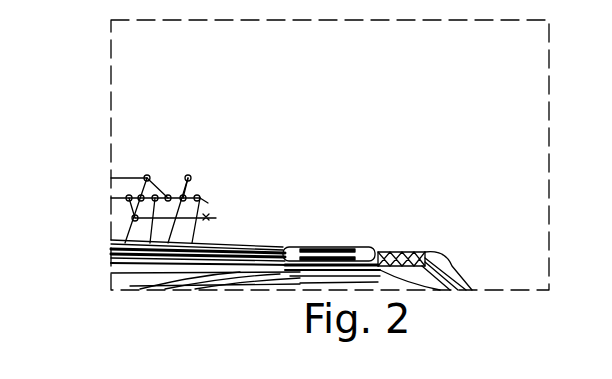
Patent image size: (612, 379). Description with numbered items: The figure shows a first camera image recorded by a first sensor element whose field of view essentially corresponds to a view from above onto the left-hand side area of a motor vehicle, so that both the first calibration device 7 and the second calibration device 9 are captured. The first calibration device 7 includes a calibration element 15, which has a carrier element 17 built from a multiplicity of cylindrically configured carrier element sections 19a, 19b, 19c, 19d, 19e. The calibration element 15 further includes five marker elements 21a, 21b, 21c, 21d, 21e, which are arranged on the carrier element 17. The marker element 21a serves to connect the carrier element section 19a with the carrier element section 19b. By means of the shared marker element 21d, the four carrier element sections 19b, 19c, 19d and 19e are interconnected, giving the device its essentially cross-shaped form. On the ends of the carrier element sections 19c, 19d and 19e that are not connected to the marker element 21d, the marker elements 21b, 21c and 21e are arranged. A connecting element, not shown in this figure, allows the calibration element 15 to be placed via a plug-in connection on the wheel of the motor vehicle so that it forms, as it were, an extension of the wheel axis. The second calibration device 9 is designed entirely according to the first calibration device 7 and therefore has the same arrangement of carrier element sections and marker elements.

The second calibration device 9 is at (96, 100).
The first calibration device 7 is at (162, 95).
The calibration element 15 is at (203, 95).
The carrier element 17 is at (228, 108).
The carrier element section 19a is at (111, 258).
The carrier element section 19b is at (207, 204).
The carrier element section 19c is at (200, 196).
The carrier element section 19d is at (188, 178).
The carrier element section 19e is at (129, 200).
The marker element 21a is at (210, 220).
The marker element 21b is at (203, 194).
The marker element 21c is at (197, 196).
The marker element 21d is at (183, 198).
The marker element 21e is at (111, 178).